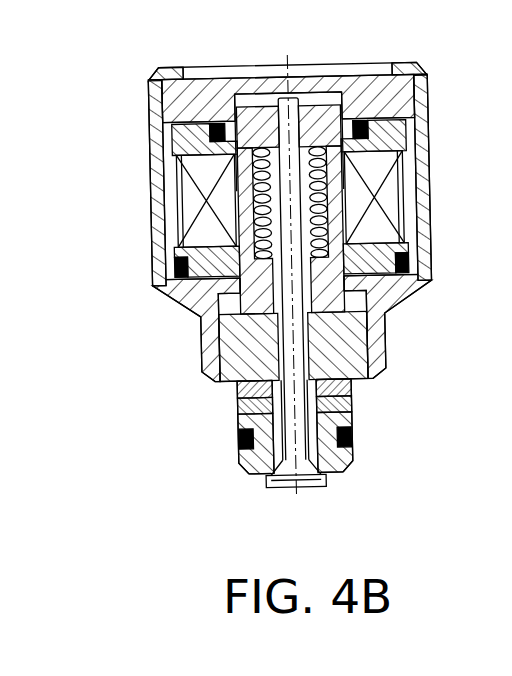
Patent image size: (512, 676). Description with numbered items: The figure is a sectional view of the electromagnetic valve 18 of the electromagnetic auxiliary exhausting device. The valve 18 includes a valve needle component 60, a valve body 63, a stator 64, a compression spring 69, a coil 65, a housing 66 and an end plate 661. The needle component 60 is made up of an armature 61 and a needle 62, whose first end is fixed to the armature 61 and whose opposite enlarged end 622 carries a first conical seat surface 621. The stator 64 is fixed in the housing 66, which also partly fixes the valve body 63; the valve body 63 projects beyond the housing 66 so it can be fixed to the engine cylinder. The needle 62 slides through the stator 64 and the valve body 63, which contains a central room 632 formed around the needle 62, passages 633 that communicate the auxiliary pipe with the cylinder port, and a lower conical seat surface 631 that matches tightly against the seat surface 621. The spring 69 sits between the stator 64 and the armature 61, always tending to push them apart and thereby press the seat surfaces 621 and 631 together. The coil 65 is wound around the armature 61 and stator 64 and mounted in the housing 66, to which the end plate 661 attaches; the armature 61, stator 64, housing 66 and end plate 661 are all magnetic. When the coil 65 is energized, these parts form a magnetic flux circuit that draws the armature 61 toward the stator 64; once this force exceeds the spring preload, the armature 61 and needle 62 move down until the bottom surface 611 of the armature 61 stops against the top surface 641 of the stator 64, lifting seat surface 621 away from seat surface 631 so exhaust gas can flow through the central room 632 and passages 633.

The electromagnetic valve 18 is at (331, 492).
The valve needle component 60 is at (238, 278).
The armature 61 is at (166, 147).
The bottom surface 611 is at (396, 187).
The needle 62 is at (166, 114).
The first conical seat surface 621 is at (283, 488).
The enlarged end 622 is at (346, 470).
The valve body 63 is at (247, 462).
The lower conical seat surface 631 is at (265, 479).
The central room 632 is at (348, 432).
The passages 633 is at (247, 397).
The stator 64 is at (415, 288).
The top surface 641 is at (170, 179).
The coil 65 is at (194, 203).
The housing 66 is at (406, 262).
The end plate 661 is at (162, 78).
The compression spring 69 is at (398, 208).